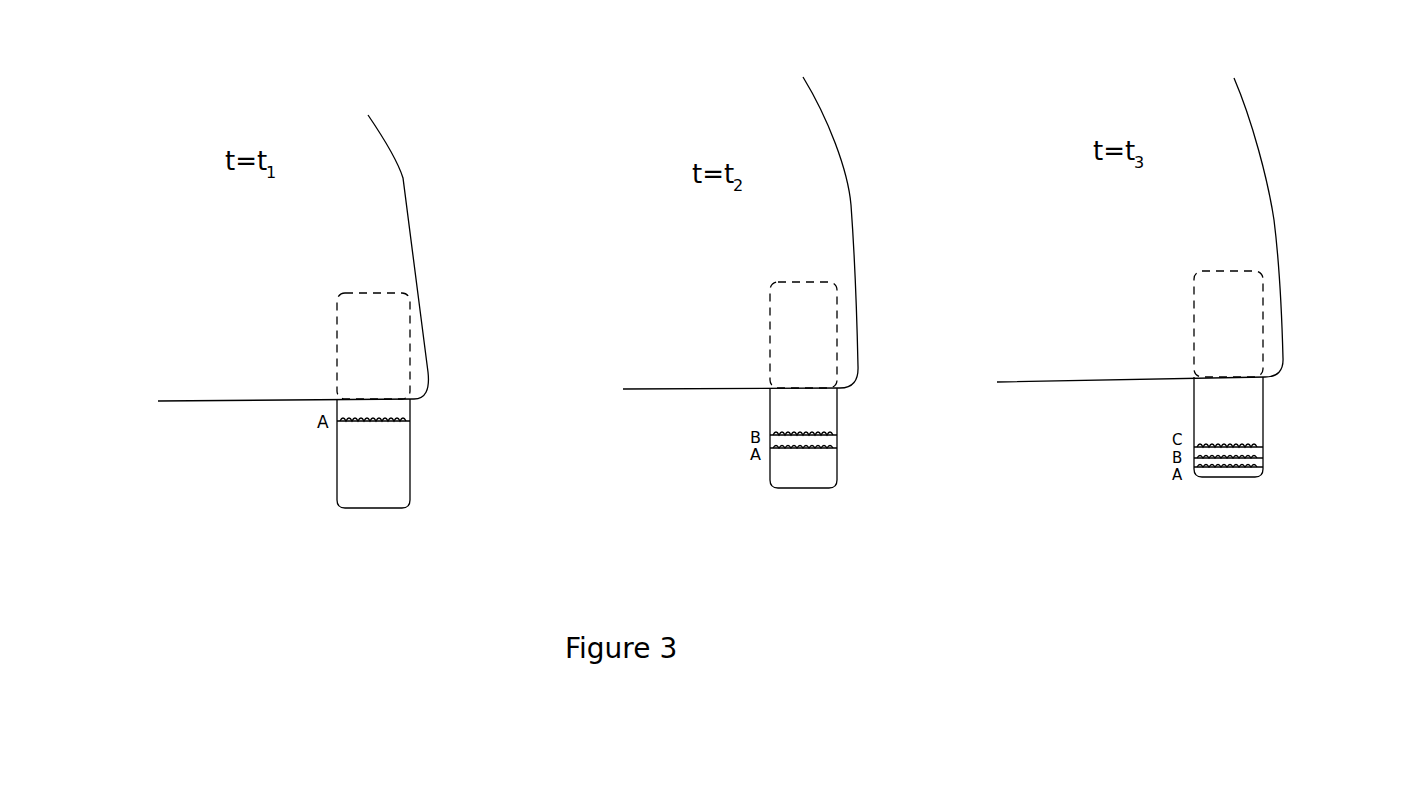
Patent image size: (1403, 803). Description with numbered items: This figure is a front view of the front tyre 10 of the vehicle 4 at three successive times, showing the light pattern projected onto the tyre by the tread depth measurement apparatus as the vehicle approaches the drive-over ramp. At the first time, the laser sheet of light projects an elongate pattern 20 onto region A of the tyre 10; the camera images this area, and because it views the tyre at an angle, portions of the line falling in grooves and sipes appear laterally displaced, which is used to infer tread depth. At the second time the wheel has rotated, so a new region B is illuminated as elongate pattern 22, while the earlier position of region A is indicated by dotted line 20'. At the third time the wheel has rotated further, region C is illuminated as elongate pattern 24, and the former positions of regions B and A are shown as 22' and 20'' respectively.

The vehicle 4 is at (172, 275).
The front tyre 10 is at (389, 353).
The elongate pattern 20 is at (413, 448).
The elongate pattern 22 is at (848, 416).
The dotted line 20' is at (853, 451).
The elongate pattern 24 is at (1262, 447).
The position of region B 22' is at (1271, 437).
The position of region A 20'' is at (1274, 479).